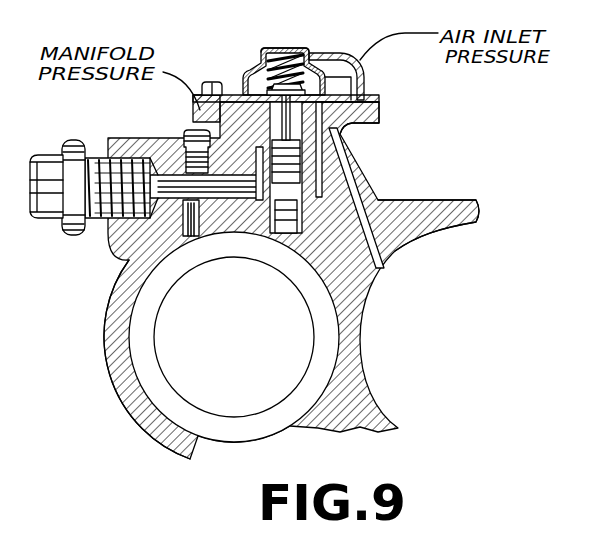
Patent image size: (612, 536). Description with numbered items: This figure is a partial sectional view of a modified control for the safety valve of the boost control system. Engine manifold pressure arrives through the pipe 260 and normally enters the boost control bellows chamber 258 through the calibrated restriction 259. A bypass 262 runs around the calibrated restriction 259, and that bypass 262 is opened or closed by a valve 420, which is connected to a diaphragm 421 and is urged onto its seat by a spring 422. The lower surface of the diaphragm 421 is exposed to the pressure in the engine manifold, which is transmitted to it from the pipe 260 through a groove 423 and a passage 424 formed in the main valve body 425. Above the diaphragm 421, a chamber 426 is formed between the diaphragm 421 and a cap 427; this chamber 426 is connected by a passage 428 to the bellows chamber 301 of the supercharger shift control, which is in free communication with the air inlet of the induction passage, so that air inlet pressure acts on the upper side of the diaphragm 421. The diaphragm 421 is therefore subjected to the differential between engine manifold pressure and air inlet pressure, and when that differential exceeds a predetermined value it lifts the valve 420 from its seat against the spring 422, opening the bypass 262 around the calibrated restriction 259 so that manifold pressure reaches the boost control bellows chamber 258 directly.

The boost control bellows chamber 258 is at (138, 323).
The calibrated restriction 259 is at (187, 230).
The pipe 260 is at (42, 167).
The bypass 262 is at (372, 274).
The bellows chamber of the supercharger shift control 301 is at (451, 200).
The valve 420 is at (290, 188).
The diaphragm 421 is at (250, 93).
The spring 422 is at (287, 50).
The groove 423 is at (234, 200).
The passage 424 is at (256, 150).
The main valve body 425 is at (368, 113).
The chamber 426 is at (322, 88).
The cap 427 is at (298, 48).
The passage 428 is at (352, 68).